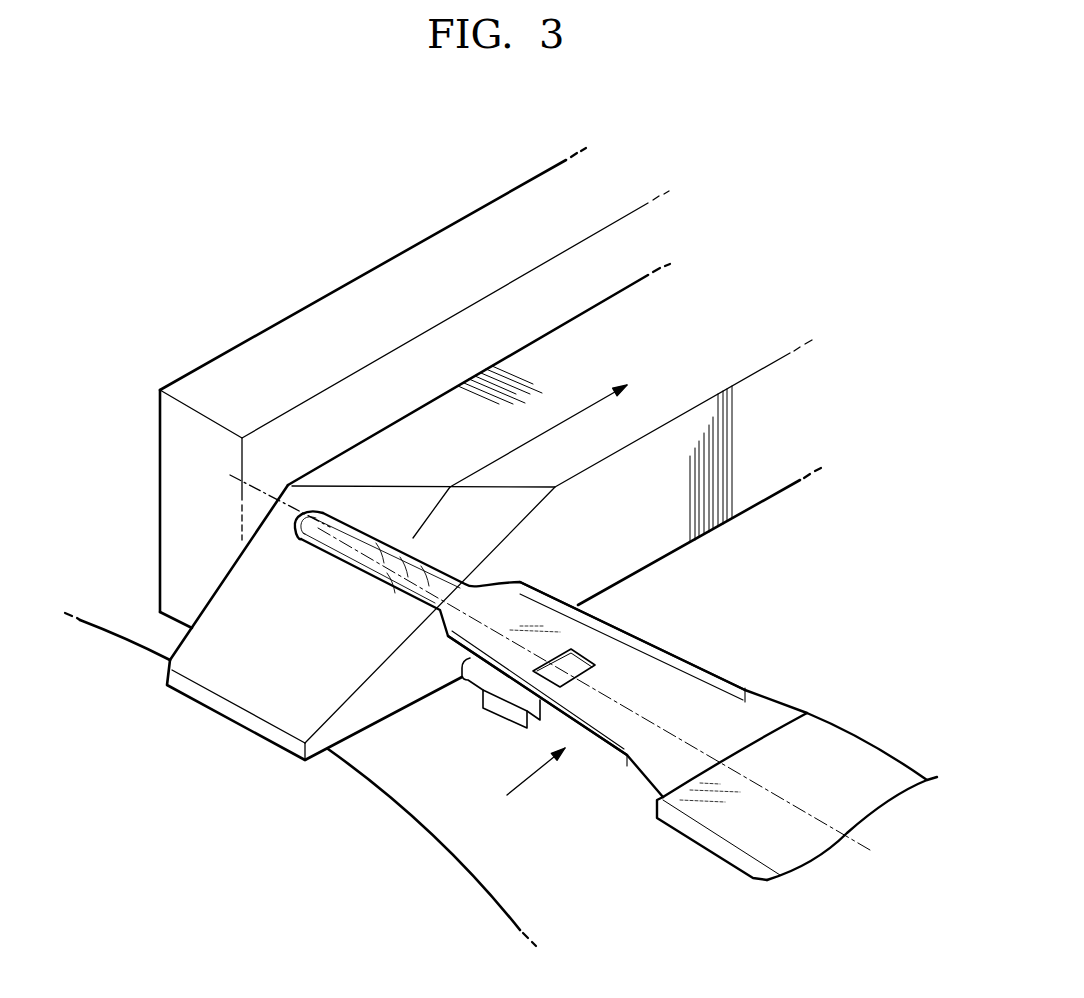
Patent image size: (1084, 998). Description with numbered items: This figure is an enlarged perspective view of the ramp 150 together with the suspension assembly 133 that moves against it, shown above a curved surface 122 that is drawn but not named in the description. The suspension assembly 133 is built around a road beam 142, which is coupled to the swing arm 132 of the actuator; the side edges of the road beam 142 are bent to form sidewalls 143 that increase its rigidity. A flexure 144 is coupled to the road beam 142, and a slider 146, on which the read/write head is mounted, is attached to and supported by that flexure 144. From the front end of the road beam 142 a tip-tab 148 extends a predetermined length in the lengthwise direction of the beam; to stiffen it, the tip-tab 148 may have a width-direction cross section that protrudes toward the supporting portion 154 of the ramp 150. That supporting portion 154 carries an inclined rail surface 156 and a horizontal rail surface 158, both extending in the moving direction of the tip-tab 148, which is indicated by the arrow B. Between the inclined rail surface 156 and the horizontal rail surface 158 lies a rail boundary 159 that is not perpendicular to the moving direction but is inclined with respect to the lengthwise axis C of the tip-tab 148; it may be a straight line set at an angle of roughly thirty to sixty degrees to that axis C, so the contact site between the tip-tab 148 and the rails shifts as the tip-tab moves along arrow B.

The photosensitive drum 122 is at (104, 638).
The swing arm 132 is at (703, 833).
The suspension assembly 133 is at (522, 783).
The road beam 142 is at (597, 647).
The sidewalls 143 is at (580, 717).
The flexure 144 is at (468, 678).
The slider 146 is at (507, 707).
The tip-tab 148 is at (296, 524).
The ramp 150 is at (318, 283).
The supporting portion 154 is at (734, 508).
The inclined rail surface 156 is at (260, 698).
The horizontal rail surface 158 is at (543, 360).
The rail boundary 159 is at (337, 485).
The arrow B (moving direction of the tip-tab) B is at (483, 463).
The lengthwise axis C is at (265, 497).